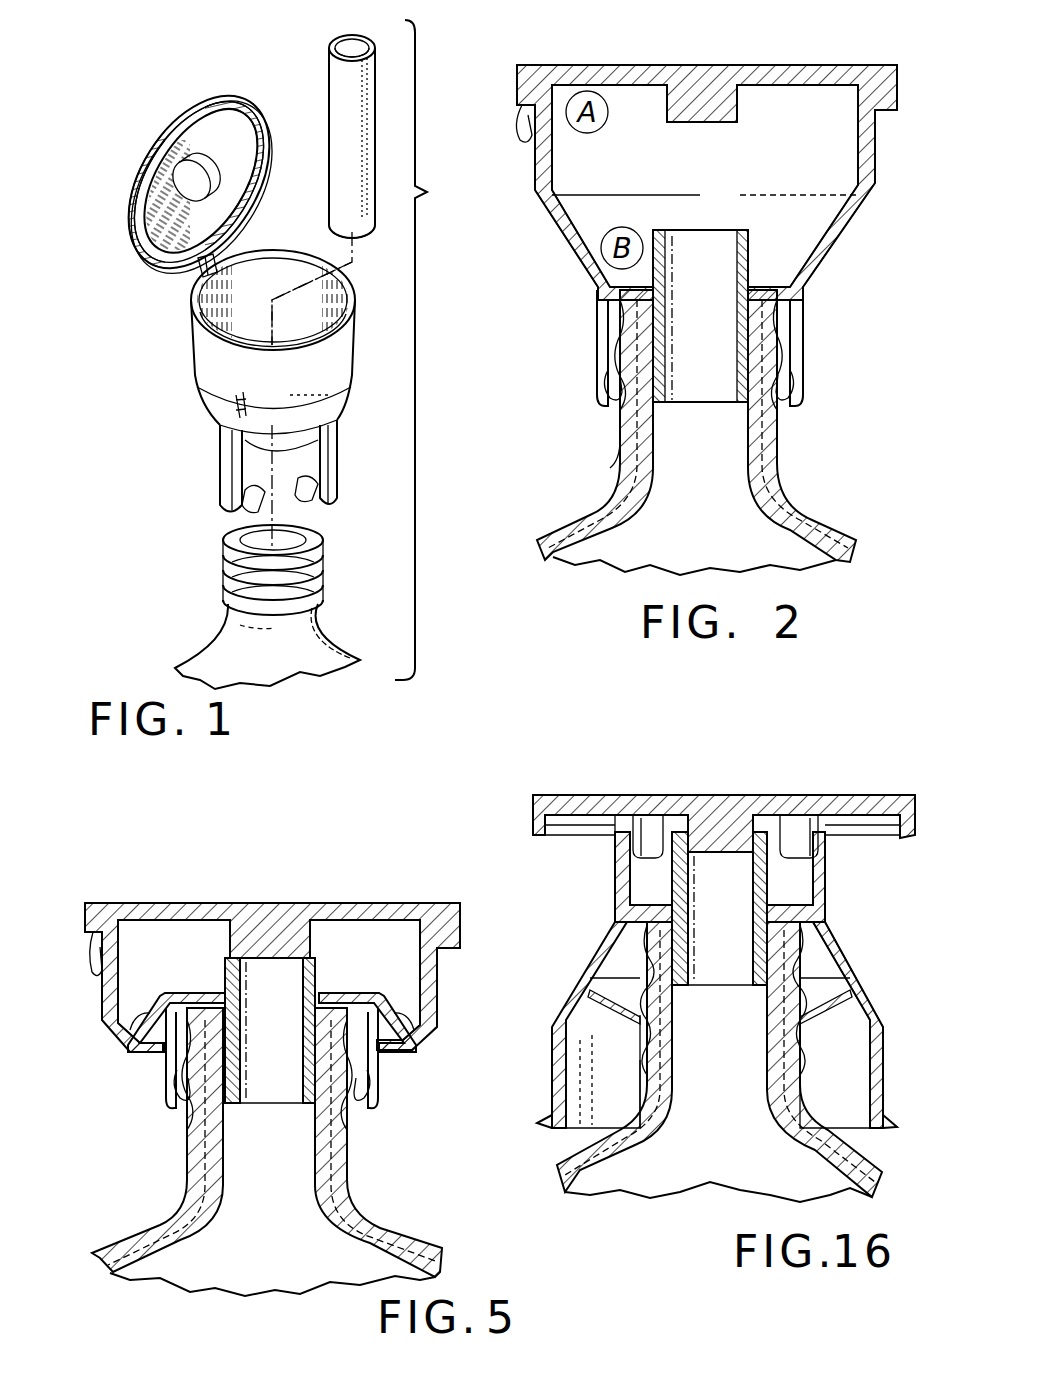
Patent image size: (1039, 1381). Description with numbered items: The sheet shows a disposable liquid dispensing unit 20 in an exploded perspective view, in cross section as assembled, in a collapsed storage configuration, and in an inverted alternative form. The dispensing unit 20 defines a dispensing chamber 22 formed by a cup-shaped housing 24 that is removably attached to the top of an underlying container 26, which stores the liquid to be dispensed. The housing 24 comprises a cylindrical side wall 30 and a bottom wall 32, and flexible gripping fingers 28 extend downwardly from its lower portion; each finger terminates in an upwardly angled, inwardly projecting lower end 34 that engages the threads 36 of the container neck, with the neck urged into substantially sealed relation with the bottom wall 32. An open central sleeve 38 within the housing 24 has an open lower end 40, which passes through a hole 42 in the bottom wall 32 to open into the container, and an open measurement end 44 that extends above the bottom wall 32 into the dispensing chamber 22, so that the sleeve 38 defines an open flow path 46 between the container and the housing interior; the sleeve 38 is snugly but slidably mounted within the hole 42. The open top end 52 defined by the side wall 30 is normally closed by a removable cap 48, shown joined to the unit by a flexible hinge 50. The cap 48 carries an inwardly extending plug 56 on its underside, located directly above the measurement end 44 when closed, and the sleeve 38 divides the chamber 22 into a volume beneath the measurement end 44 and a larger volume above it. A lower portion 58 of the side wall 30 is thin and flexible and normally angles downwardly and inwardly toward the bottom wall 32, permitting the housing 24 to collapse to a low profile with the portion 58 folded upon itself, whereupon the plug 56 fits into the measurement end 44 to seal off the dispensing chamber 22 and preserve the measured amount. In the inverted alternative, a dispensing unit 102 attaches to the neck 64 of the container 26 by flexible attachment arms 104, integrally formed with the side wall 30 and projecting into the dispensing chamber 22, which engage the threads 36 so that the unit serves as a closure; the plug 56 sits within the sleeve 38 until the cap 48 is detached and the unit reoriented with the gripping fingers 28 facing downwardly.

In FIG. 1, the dispensing unit 20 is at (150, 410).
In FIG. 2, the dispensing unit 20 is at (765, 66).
In FIG. 1, the dispensing chamber 22 is at (250, 340).
In FIG. 2, the dispensing chamber 22 is at (585, 200).
In FIG. 5, the dispensing chamber 22 is at (145, 940).
In FIG. 1, the cup-shaped housing 24 is at (198, 362).
In FIG. 2, the cup-shaped housing 24 is at (575, 282).
In FIG. 16, the cup-shaped housing 24 is at (875, 1008).
In FIG. 1, the container 26 is at (213, 655).
In FIG. 2, the container 26 is at (822, 526).
In FIG. 5, the container 26 is at (118, 1245).
In FIG. 16, the container 26 is at (880, 1166).
In FIG. 1, the gripping fingers 28 is at (222, 465).
In FIG. 2, the gripping fingers 28 is at (798, 376).
In FIG. 5, the gripping fingers 28 is at (170, 1082).
In FIG. 16, the gripping fingers 28 is at (628, 886).
In FIG. 2, the cylindrical side wall 30 is at (882, 135).
In FIG. 5, the cylindrical side wall 30 is at (440, 992).
In FIG. 16, the cylindrical side wall 30 is at (880, 1095).
In FIG. 2, the bottom wall 32 is at (780, 282).
In FIG. 5, the bottom wall 32 is at (195, 985).
In FIG. 16, the bottom wall 32 is at (835, 948).
In FIG. 1, the lower end 34 is at (268, 488).
In FIG. 2, the lower end 34 is at (800, 360).
In FIG. 5, the lower end 34 is at (372, 1095).
In FIG. 16, the lower end 34 is at (648, 840).
In FIG. 1, the threads 36 is at (232, 562).
In FIG. 2, the threads 36 is at (782, 420).
In FIG. 5, the threads 36 is at (345, 1120).
In FIG. 16, the threads 36 is at (640, 1050).
In FIG. 1, the central sleeve 38 is at (333, 70).
In FIG. 2, the central sleeve 38 is at (620, 412).
In FIG. 5, the central sleeve 38 is at (315, 975).
In FIG. 16, the central sleeve 38 is at (688, 935).
In FIG. 1, the open lower end 40 is at (356, 232).
In FIG. 2, the hole 42 is at (757, 283).
In FIG. 1, the measurement end 44 is at (360, 48).
In FIG. 2, the measurement end 44 is at (707, 230).
In FIG. 2, the flow path 46 is at (701, 316).
In FIG. 5, the flow path 46 is at (272, 1030).
In FIG. 1, the cap 48 is at (135, 196).
In FIG. 2, the cap 48 is at (850, 72).
In FIG. 5, the cap 48 is at (345, 904).
In FIG. 16, the cap 48 is at (830, 800).
In FIG. 1, the flexible hinge 50 is at (195, 272).
In FIG. 2, the flexible hinge 50 is at (522, 142).
In FIG. 5, the flexible hinge 50 is at (92, 975).
In FIG. 1, the open top end 52 is at (348, 292).
In FIG. 1, the plug 56 is at (195, 168).
In FIG. 2, the plug 56 is at (715, 124).
In FIG. 5, the plug 56 is at (270, 935).
In FIG. 16, the plug 56 is at (728, 845).
In FIG. 2, the lower portion of the side wall 58 is at (578, 255).
In FIG. 5, the lower portion of the side wall 58 is at (135, 1025).
In FIG. 16, the neck 64 is at (640, 1090).
In FIG. 16, the dispensing unit 102 is at (585, 962).
In FIG. 16, the attachment arms 104 is at (618, 1010).